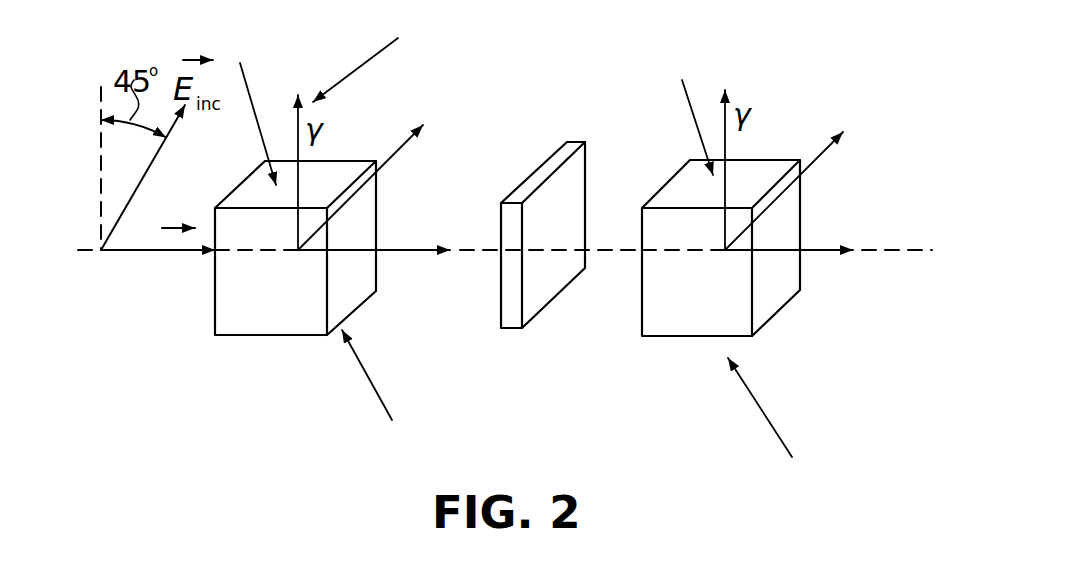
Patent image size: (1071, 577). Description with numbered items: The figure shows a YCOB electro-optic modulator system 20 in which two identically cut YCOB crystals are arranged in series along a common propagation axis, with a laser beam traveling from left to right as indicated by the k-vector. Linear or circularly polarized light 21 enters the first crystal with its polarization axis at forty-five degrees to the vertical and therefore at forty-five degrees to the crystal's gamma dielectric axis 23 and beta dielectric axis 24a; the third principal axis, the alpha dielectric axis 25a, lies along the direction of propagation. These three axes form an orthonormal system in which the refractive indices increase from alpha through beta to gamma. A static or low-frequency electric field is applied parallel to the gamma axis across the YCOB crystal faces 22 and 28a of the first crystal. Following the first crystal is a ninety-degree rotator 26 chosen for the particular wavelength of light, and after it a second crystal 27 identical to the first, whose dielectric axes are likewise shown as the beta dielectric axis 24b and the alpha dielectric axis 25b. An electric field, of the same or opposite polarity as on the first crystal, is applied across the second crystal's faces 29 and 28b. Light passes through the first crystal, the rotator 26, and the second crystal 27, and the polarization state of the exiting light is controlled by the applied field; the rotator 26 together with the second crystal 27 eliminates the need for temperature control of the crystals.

The YCOB electro-optic modulator system 20 is at (563, 358).
The linear polarized light 21 is at (142, 252).
The YCOB crystal face 22 is at (250, 83).
The γ dielectric axis 23 is at (355, 70).
The β dielectric axis 24a is at (392, 162).
The β dielectric axis 24b is at (815, 160).
The α dielectric axis 25a is at (413, 252).
The α dielectric axis 25b is at (828, 252).
The 90-degree rotator 26 is at (562, 152).
The second crystal 27 is at (770, 158).
The YCOB crystal face 28a is at (380, 398).
The YCOB crystal face 28b is at (766, 412).
The YCOB crystal face 29 is at (698, 137).